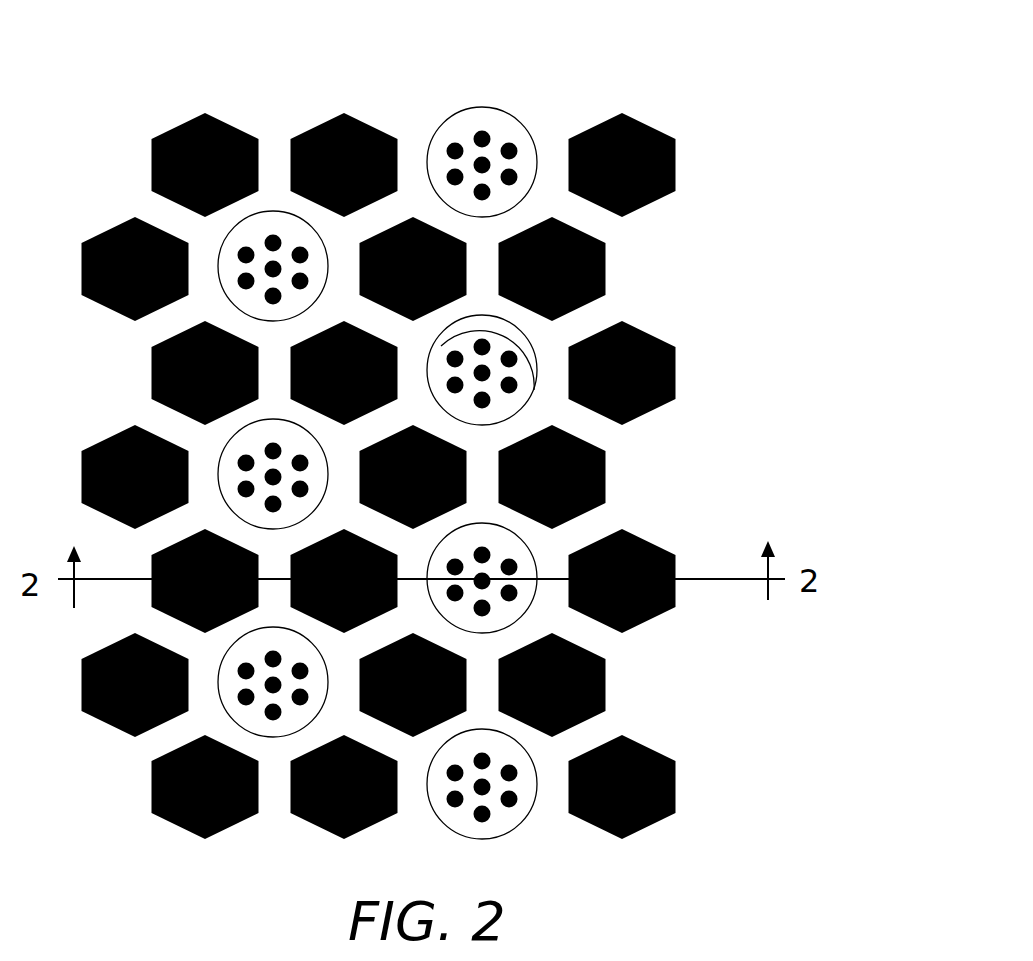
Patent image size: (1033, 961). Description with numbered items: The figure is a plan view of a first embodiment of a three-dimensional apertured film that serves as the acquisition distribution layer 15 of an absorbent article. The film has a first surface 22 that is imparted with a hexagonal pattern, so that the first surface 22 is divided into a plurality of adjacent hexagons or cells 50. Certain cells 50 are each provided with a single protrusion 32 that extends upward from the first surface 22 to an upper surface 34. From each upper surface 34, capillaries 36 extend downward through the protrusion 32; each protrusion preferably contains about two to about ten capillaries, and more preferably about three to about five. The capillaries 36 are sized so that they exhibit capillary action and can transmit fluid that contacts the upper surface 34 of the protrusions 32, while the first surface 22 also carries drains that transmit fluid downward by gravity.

The acquisition distribution layer 15 is at (606, 70).
The first surface 22 is at (547, 340).
The protrusion 32 is at (525, 394).
The upper surface 34 is at (493, 405).
The capillary 36 is at (512, 800).
The cell 50 is at (607, 673).